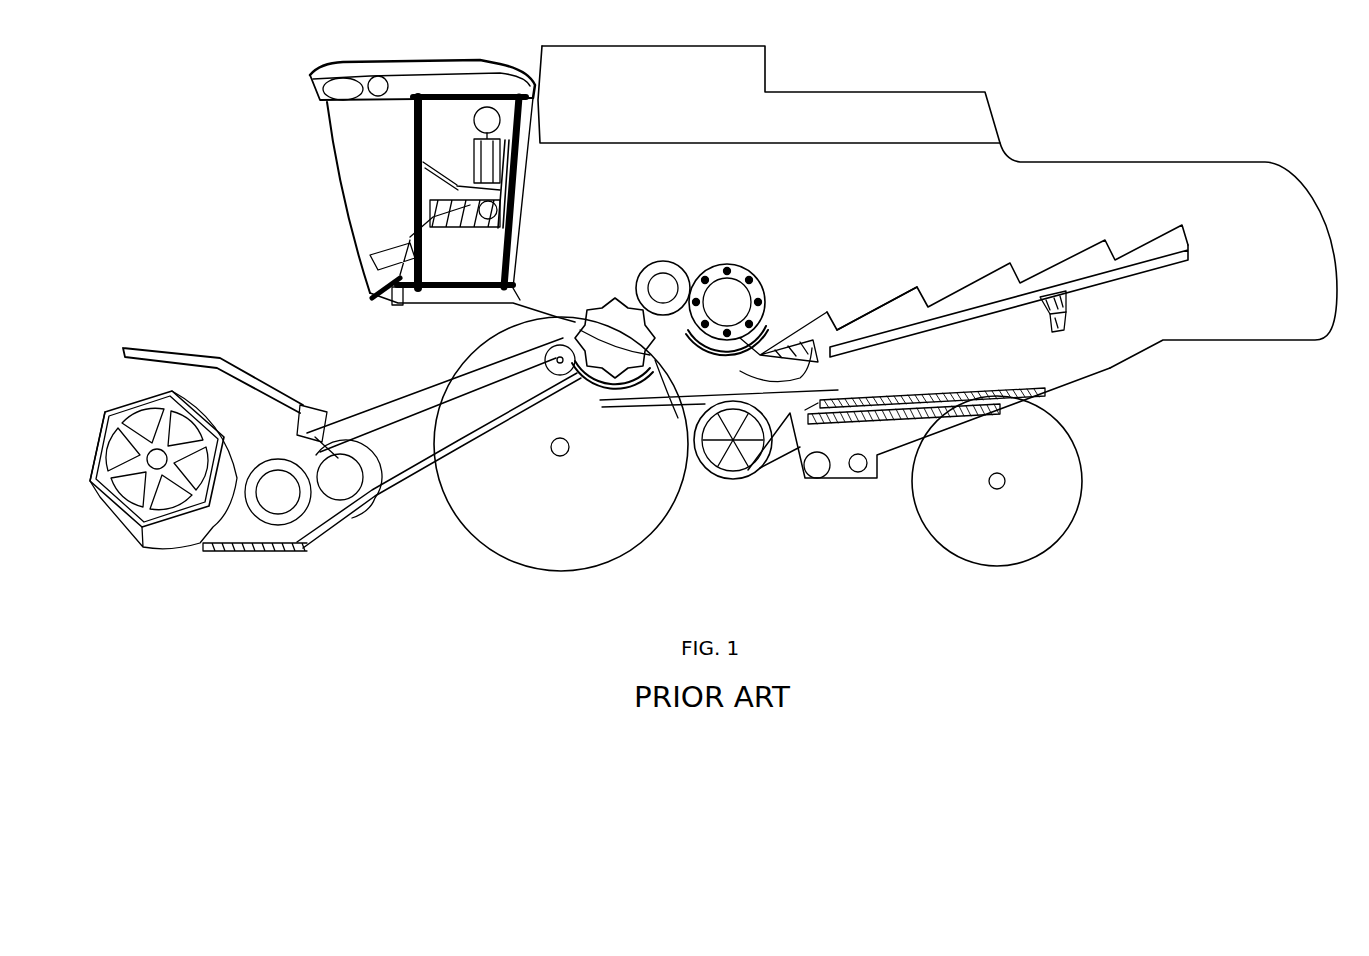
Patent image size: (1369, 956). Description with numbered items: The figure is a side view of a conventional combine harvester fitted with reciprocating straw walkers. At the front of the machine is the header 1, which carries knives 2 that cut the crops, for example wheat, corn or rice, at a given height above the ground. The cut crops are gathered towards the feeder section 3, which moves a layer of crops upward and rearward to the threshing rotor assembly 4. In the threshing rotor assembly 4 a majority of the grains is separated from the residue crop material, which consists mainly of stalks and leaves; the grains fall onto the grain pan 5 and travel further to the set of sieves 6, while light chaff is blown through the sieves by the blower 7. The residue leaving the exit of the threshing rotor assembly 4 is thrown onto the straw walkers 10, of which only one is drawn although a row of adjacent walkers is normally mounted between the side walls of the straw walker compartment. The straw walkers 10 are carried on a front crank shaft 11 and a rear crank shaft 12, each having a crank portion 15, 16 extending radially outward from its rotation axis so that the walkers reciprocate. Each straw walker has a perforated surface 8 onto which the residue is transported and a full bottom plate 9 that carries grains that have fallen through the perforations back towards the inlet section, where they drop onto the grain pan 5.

The header 1 is at (188, 348).
The knives 2 is at (218, 553).
The feeder section 3 is at (413, 428).
The threshing rotor assembly 4 is at (627, 273).
The grain pan 5 is at (650, 403).
The set of sieves 6 is at (918, 393).
The blower 7 is at (745, 468).
The perforated surfaces 8 is at (878, 304).
The full bottom plate 9 is at (940, 328).
The straw walkers 10 is at (962, 272).
The front crank shaft 11 is at (795, 381).
The rear crank shaft 12 is at (1064, 331).
The crank portion 15 is at (820, 348).
The crank portion 16 is at (1067, 302).